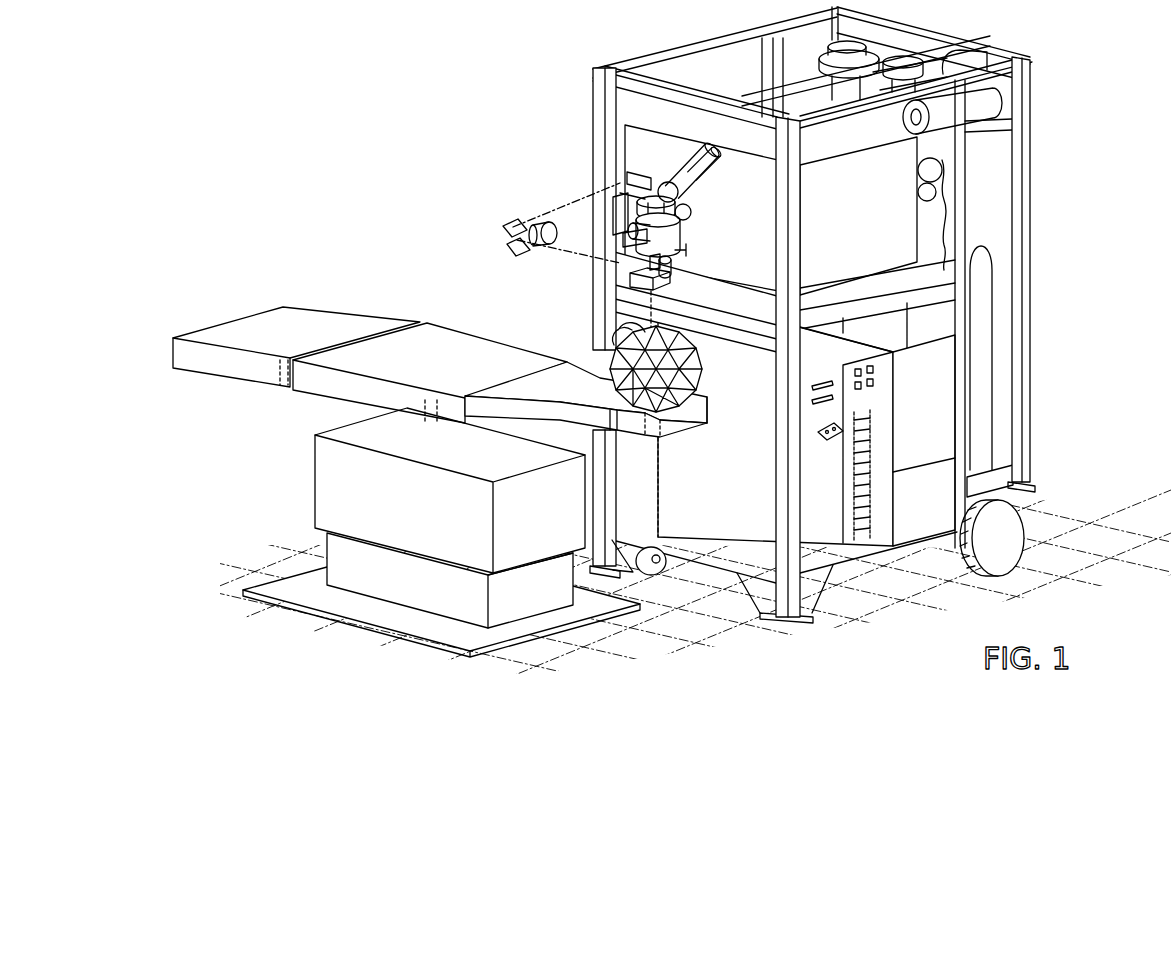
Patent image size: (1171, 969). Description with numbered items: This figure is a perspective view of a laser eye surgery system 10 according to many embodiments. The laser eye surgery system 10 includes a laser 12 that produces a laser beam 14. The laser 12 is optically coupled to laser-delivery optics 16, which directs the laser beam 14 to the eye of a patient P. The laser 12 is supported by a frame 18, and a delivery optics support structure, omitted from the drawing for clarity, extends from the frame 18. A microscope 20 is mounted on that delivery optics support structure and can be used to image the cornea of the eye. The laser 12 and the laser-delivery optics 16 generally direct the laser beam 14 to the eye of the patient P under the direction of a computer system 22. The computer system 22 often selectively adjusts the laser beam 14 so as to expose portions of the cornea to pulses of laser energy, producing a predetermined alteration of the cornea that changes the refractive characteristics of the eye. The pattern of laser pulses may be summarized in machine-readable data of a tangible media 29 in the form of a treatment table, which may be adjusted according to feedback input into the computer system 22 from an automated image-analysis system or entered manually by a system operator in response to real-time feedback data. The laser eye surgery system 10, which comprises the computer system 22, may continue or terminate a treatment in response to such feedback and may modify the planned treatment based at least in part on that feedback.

The laser eye surgery system 10 is at (331, 91).
The laser 12 is at (857, 324).
The laser beam 14 is at (567, 205).
The laser-delivery optics 16 is at (624, 264).
The frame 18 is at (692, 55).
The microscope 20 is at (680, 190).
The computer system 22 is at (786, 469).
The tangible media 29 is at (821, 434).
The patient P is at (703, 372).